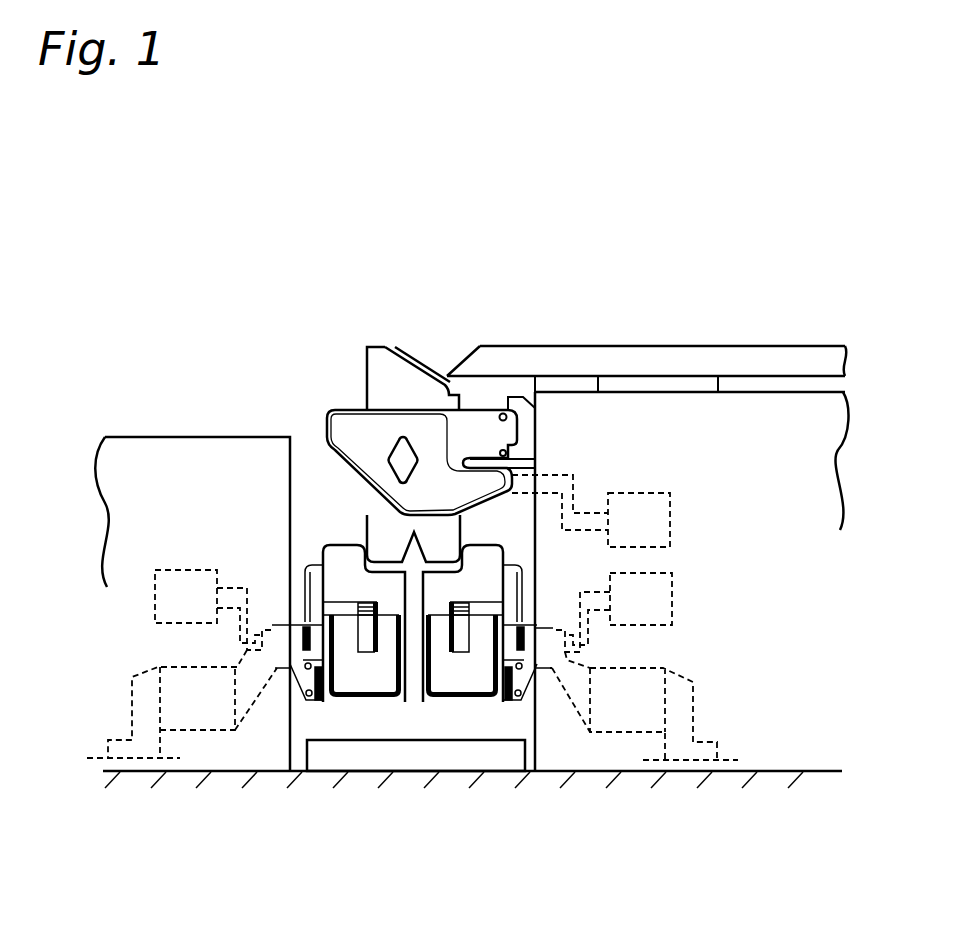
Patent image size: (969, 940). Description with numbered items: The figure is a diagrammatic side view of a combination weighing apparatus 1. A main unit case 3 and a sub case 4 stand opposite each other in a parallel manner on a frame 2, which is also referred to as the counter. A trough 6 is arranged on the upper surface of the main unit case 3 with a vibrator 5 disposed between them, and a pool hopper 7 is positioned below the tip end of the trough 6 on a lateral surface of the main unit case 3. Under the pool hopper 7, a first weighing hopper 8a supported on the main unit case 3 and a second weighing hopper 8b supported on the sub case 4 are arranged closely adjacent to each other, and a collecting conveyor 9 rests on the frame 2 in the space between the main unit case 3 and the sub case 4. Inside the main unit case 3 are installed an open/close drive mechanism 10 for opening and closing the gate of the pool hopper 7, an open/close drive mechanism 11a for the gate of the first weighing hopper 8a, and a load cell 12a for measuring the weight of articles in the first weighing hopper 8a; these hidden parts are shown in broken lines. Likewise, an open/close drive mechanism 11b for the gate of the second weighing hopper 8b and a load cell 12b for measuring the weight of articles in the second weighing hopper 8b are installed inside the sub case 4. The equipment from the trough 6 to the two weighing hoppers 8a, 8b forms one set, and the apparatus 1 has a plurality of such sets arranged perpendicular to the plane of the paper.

The combination weighing apparatus 1 is at (303, 320).
The frame 2 is at (787, 780).
The main unit case 3 is at (827, 457).
The sub case 4 is at (137, 513).
The vibrator 5 is at (657, 387).
The trough 6 is at (582, 362).
The pool hopper 7 is at (367, 392).
The first weighing hopper 8a is at (483, 697).
The second weighing hopper 8b is at (358, 697).
The collecting conveyor 9 is at (413, 757).
The open/close drive mechanism 10 is at (672, 493).
The open/close drive mechanism 11a is at (672, 583).
The open/close drive mechanism 11b is at (155, 605).
The load cell 12a is at (693, 687).
The load cell 12b is at (132, 703).